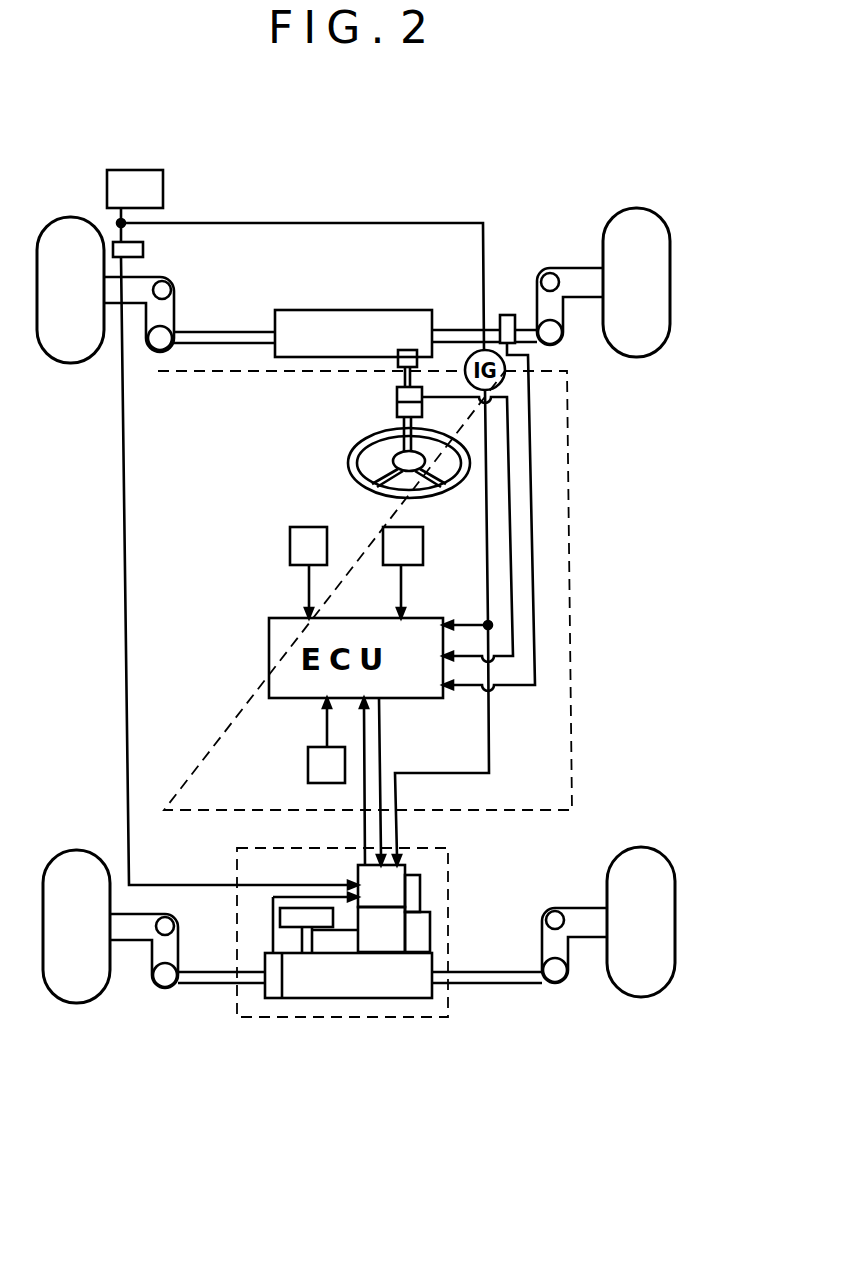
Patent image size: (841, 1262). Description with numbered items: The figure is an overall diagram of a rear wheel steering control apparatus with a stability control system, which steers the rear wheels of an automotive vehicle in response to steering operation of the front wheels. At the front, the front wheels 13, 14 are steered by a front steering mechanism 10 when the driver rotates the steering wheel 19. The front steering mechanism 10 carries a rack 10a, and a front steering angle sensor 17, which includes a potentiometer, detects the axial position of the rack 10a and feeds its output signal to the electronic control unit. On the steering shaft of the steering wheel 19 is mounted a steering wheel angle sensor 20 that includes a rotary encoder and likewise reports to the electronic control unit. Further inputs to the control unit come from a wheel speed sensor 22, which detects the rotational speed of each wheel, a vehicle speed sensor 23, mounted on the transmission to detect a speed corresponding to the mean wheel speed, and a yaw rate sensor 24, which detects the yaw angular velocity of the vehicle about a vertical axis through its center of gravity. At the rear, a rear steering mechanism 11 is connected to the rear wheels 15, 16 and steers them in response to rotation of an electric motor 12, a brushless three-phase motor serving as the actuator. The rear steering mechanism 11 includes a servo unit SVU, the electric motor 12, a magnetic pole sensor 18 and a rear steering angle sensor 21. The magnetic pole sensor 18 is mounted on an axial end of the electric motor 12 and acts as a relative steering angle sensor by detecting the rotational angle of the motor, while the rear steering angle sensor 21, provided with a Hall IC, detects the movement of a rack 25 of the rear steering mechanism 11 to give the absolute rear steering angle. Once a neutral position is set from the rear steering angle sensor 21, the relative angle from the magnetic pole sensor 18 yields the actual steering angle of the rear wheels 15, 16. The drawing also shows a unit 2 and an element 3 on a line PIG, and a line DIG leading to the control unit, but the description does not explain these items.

The hydraulic pump 2 is at (137, 194).
The check valve 3 is at (143, 250).
The front steering mechanism 10 is at (291, 323).
The rack 10a is at (209, 330).
The rear steering mechanism 11 is at (334, 1024).
The electric motor 12 is at (384, 942).
The front wheel 13 is at (72, 355).
The front wheel 14 is at (635, 350).
The rear wheel 15 is at (73, 993).
The rear wheel 16 is at (642, 985).
The front steering angle sensor 17 is at (507, 315).
The magnetic pole sensor 18 is at (424, 935).
The steering wheel 19 is at (348, 463).
The steering wheel angle sensor 20 is at (397, 394).
The rear steering angle sensor 21 is at (271, 990).
The wheel speed sensor 22 is at (297, 547).
The vehicle speed sensor 23 is at (418, 545).
The yaw rate sensor 24 is at (308, 765).
The rack 25 is at (207, 980).
The pressure supply pipe PIG is at (128, 750).
The drain pipe DIG is at (488, 745).
The servo unit SVU is at (446, 848).